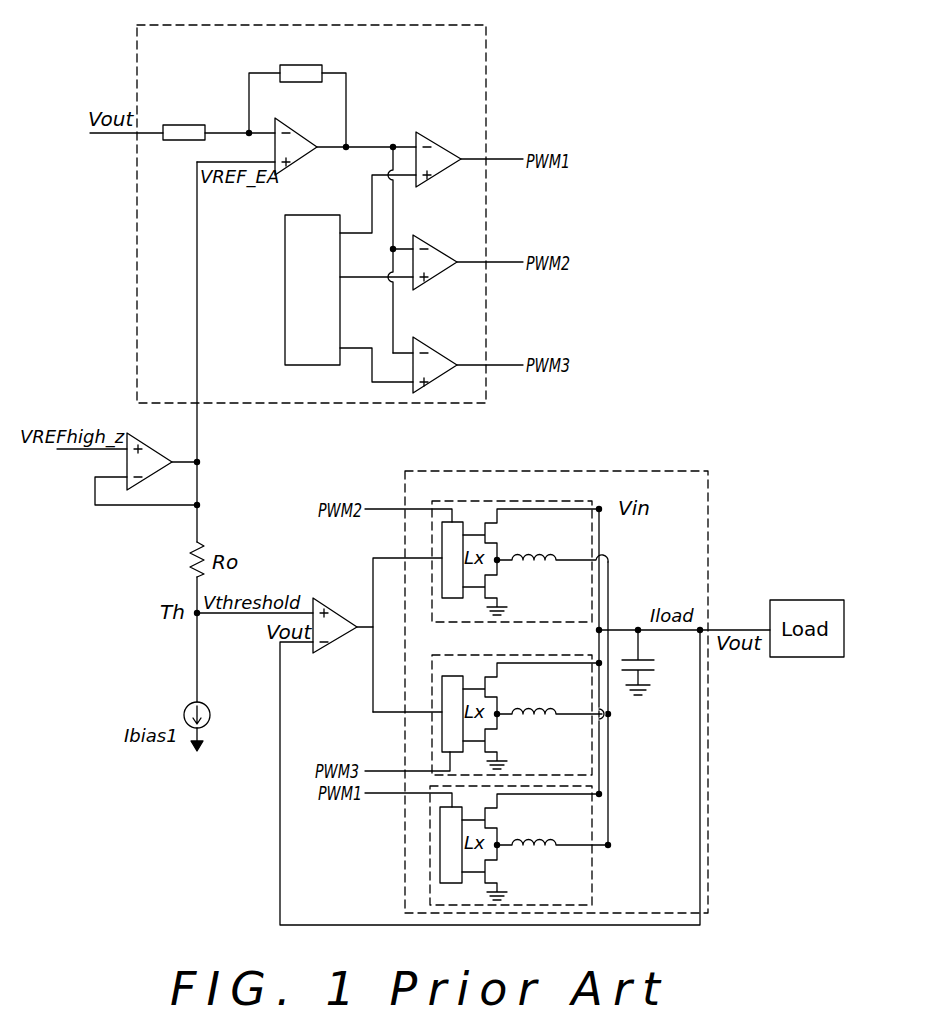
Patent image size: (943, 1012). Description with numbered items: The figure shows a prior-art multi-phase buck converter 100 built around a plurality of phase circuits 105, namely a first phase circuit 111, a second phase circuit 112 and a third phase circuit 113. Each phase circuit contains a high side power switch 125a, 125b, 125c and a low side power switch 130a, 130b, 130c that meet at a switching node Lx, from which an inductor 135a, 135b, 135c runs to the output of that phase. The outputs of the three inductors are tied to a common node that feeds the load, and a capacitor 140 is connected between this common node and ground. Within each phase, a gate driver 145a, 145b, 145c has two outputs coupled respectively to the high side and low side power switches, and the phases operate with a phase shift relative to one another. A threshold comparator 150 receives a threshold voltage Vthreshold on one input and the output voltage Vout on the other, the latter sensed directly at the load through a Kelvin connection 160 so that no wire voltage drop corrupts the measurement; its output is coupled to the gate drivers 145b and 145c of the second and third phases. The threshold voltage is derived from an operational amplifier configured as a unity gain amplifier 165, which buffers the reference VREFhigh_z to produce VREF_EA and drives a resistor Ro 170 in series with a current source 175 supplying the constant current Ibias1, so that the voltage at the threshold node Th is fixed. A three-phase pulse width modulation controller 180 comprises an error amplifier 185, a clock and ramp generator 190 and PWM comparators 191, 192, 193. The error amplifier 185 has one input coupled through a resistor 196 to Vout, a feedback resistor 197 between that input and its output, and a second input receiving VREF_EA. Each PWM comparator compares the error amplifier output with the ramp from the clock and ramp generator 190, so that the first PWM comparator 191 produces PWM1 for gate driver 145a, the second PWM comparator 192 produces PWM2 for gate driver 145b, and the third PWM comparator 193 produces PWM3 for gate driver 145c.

The multi-phase buck converter 100 is at (168, 838).
The plurality of phase circuits 105 is at (644, 471).
The first phase circuit 111 is at (432, 812).
The second phase circuit 112 is at (432, 527).
The third phase circuit 113 is at (432, 681).
The high side power switch 125a is at (503, 822).
The high side power switch 125b is at (503, 537).
The high side power switch 125c is at (503, 691).
The low side power switch 130a is at (500, 871).
The low side power switch 130b is at (500, 586).
The low side power switch 130c is at (500, 740).
The inductor 135a is at (526, 842).
The inductor 135b is at (526, 557).
The inductor 135c is at (526, 711).
The capacitor 140 is at (647, 676).
The gate driver 145a is at (440, 855).
The gate driver 145b is at (442, 580).
The gate driver 145c is at (442, 728).
The threshold comparator 150 is at (340, 608).
The Kelvin connection 160 is at (280, 881).
The unity gain amplifier 165 is at (148, 438).
The resistor Ro 170 is at (190, 561).
The current source 175 is at (184, 714).
The three-phase pulse width modulation controller 180 is at (487, 56).
The error amplifier 185 is at (299, 110).
The clock and ramp generator 190 is at (312, 290).
The first PWM comparator 191 is at (436, 134).
The second PWM comparator 192 is at (436, 237).
The third PWM comparator 193 is at (436, 339).
The resistor 196 is at (182, 124).
The second resistor 197 is at (302, 64).